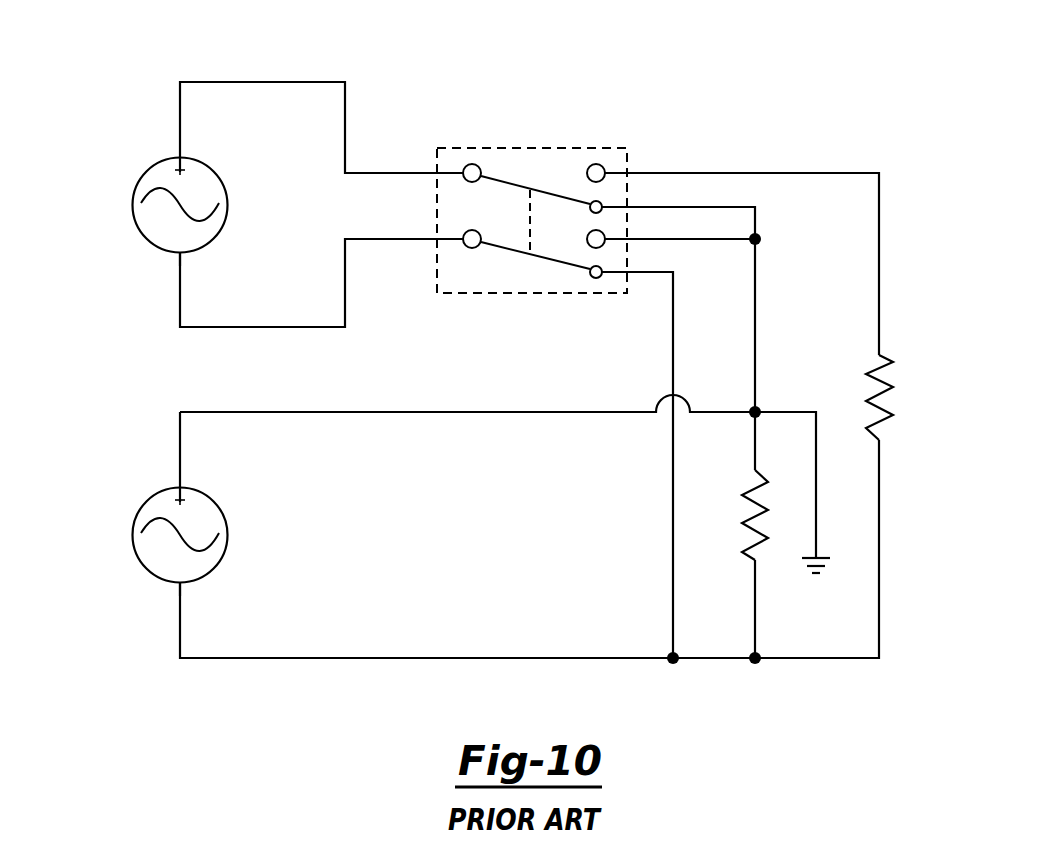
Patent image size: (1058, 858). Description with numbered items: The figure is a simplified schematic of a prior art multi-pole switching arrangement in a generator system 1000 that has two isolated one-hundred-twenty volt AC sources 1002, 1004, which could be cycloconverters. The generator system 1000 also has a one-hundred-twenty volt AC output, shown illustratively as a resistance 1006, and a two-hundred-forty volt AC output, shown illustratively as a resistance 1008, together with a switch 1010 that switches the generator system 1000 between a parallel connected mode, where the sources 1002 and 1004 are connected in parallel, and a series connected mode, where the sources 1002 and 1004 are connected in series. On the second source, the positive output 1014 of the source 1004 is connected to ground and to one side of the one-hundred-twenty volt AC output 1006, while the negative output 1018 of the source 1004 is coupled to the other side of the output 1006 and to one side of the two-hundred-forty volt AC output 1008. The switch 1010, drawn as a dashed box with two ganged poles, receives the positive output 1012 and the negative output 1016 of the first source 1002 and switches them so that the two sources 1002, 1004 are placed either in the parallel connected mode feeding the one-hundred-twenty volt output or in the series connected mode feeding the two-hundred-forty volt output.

The generator system 1000 is at (393, 62).
The 120 VAC source 1002 is at (143, 162).
The 120 VAC source 1004 is at (143, 492).
The 120 VAC output 1006 is at (745, 522).
The 240 VAC output 1008 is at (893, 388).
The switch 1010 is at (600, 147).
The positive output 1012 is at (182, 160).
The positive output 1014 is at (182, 489).
The negative output 1016 is at (179, 256).
The negative output 1018 is at (179, 585).